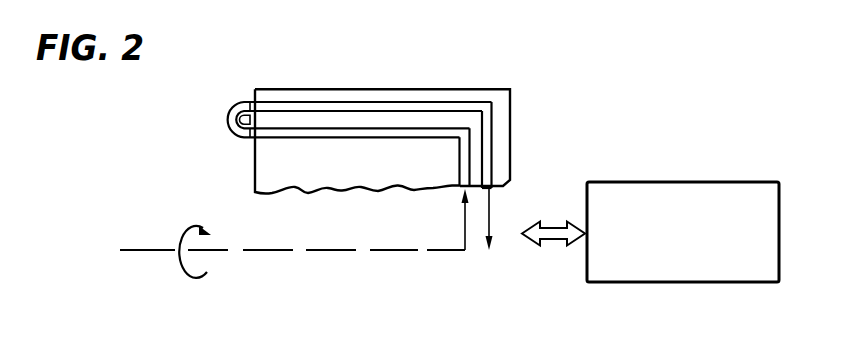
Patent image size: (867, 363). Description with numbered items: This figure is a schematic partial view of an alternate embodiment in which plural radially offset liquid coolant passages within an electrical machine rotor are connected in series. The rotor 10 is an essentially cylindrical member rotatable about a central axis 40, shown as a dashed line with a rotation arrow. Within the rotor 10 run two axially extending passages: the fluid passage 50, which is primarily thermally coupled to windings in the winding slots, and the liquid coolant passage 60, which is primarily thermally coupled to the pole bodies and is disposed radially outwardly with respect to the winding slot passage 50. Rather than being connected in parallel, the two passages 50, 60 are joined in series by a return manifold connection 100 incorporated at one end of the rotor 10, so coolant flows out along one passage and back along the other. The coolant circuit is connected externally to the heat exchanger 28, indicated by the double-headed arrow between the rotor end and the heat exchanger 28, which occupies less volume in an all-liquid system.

The rotor 10 is at (258, 93).
The liquid coolant passage 60 is at (343, 107).
The fluid passage 50 is at (332, 131).
The return manifold connection 100 is at (226, 125).
The central axis 40 is at (150, 251).
The heat exchangers, pump, etc. 28 is at (690, 192).